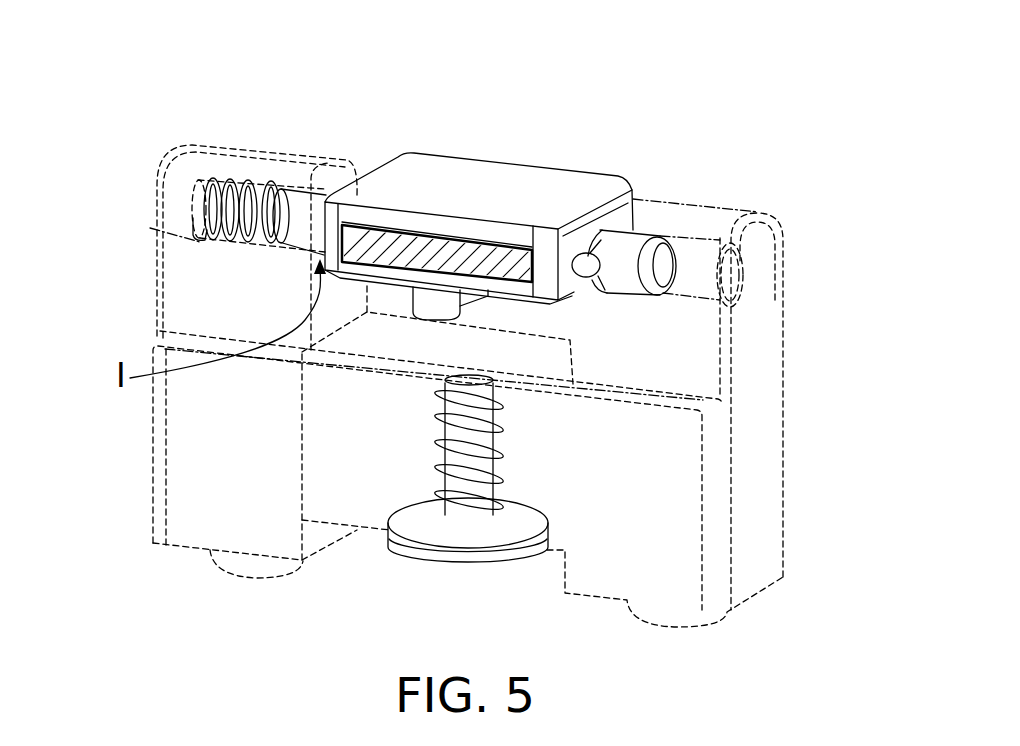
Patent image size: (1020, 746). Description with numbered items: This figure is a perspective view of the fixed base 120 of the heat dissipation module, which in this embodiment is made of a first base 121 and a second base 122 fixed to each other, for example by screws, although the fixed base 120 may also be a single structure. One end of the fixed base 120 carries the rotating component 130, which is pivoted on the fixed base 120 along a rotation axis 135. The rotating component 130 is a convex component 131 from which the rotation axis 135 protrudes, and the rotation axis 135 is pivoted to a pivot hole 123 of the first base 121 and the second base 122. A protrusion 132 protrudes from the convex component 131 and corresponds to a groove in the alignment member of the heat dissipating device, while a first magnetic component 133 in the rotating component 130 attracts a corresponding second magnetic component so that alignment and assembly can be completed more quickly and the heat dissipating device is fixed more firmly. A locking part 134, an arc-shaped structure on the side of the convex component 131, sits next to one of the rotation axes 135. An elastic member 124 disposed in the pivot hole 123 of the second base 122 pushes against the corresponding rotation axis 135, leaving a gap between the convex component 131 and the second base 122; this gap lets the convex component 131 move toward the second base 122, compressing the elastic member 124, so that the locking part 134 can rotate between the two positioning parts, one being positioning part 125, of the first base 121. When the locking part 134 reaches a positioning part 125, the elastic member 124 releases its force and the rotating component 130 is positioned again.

The fixed base 120 is at (474, 445).
The first base 121 is at (768, 273).
The second base 122 is at (182, 270).
The pivot hole 123 is at (210, 180).
The elastic member 124 is at (230, 196).
The positioning part 125 is at (592, 289).
The rotating component 130 is at (548, 90).
The convex component 131 is at (507, 182).
The protrusion 132 is at (430, 295).
The first magnetic component 133 is at (392, 240).
The locking part 134 is at (577, 252).
The rotation axis 135 is at (299, 204).